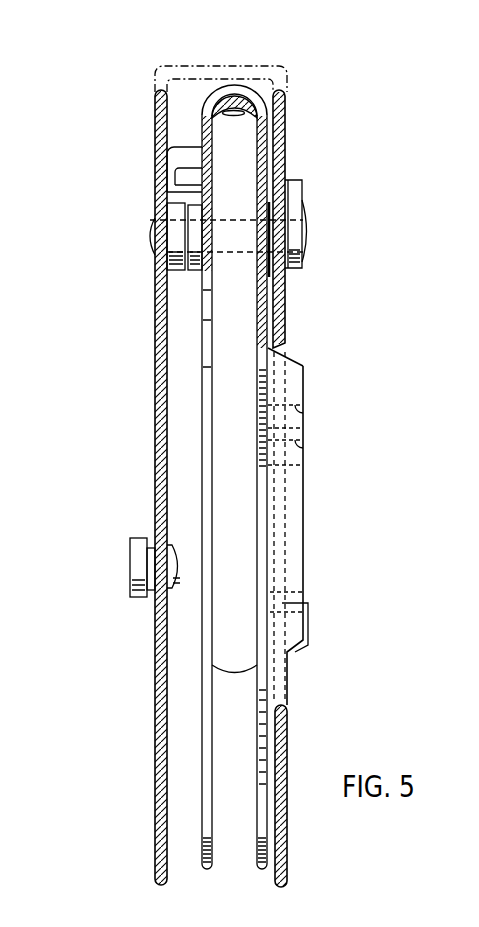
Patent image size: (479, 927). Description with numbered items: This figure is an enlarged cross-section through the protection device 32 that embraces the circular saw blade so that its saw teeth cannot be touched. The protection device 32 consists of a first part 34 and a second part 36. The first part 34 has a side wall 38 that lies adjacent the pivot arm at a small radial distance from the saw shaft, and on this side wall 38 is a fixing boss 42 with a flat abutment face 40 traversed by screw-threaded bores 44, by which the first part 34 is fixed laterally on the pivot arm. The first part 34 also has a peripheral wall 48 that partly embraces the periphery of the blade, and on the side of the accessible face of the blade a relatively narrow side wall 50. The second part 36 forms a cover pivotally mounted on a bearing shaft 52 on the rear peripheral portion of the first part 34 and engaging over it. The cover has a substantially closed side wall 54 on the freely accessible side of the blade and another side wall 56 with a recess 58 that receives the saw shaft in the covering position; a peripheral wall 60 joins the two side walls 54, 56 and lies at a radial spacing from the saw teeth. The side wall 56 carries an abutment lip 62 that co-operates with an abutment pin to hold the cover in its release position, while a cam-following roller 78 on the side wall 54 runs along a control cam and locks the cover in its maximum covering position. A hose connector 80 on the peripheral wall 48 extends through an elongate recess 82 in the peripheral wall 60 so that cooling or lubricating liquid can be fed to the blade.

The protection device 32 is at (140, 129).
The first part 34 is at (192, 315).
The second part 36 is at (147, 417).
The side wall 38 is at (273, 308).
The abutment face 40 is at (303, 508).
The fixing boss 42 is at (292, 382).
The screw-threaded bores 44 is at (290, 445).
The peripheral wall 48 is at (237, 97).
The side wall 50 is at (200, 190).
The bearing shaft 52 is at (303, 235).
The side wall 54 is at (160, 470).
The side wall 56 is at (282, 149).
The recess 58 is at (287, 705).
The peripheral wall 60 is at (188, 68).
The abutment lip 62 is at (307, 623).
The cam-following roller 78 is at (132, 582).
The hose connector 80 is at (250, 88).
The elongate recess 82 is at (190, 152).